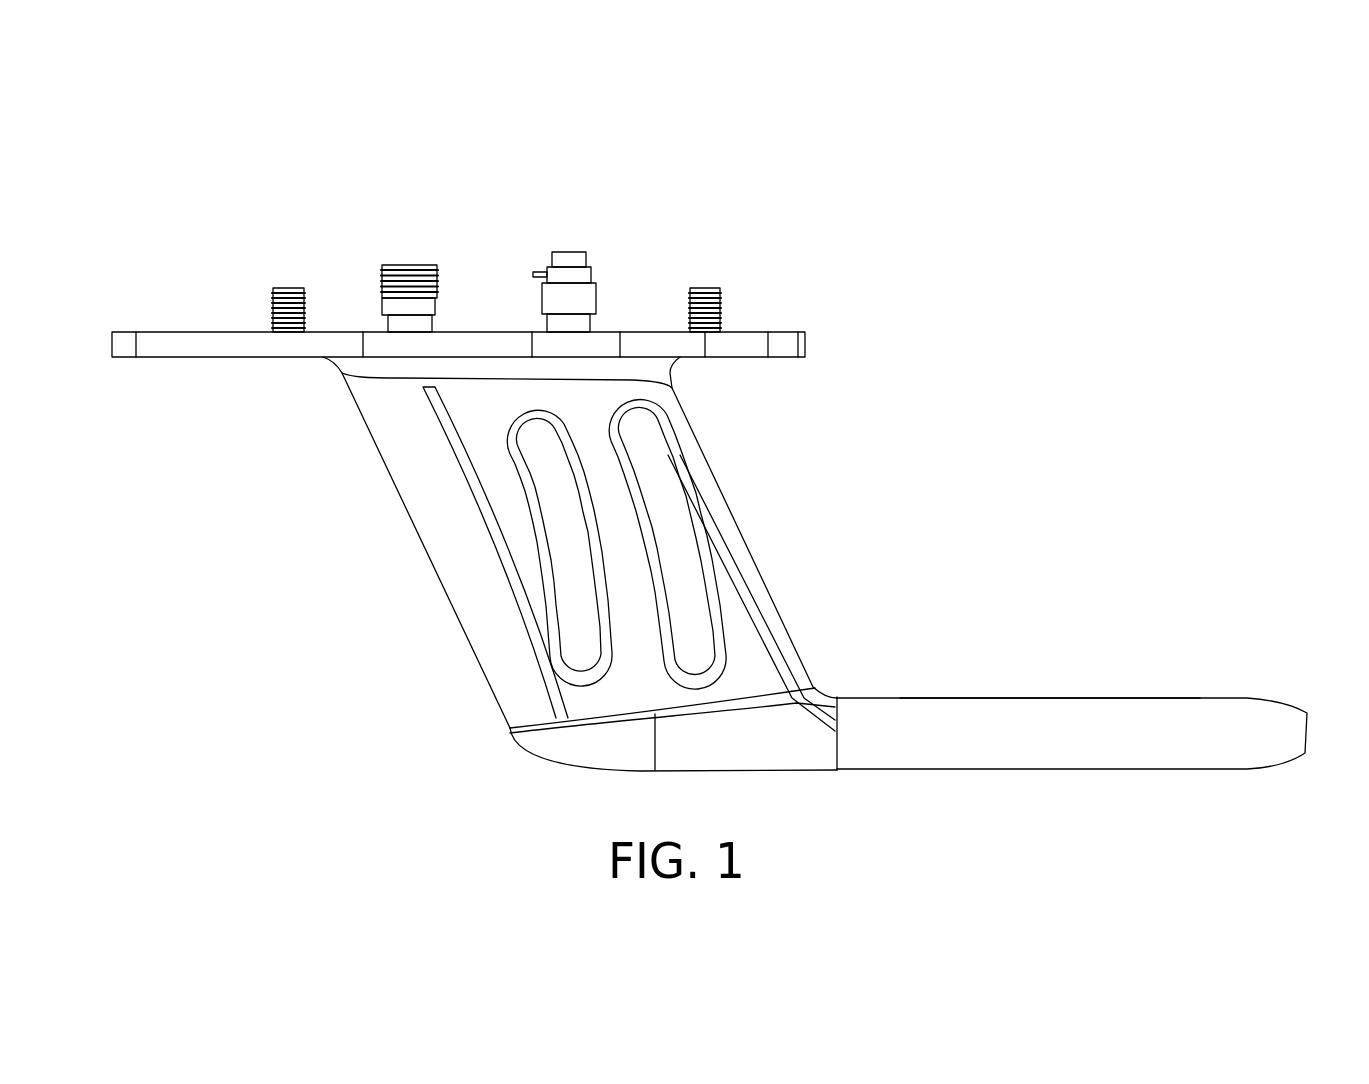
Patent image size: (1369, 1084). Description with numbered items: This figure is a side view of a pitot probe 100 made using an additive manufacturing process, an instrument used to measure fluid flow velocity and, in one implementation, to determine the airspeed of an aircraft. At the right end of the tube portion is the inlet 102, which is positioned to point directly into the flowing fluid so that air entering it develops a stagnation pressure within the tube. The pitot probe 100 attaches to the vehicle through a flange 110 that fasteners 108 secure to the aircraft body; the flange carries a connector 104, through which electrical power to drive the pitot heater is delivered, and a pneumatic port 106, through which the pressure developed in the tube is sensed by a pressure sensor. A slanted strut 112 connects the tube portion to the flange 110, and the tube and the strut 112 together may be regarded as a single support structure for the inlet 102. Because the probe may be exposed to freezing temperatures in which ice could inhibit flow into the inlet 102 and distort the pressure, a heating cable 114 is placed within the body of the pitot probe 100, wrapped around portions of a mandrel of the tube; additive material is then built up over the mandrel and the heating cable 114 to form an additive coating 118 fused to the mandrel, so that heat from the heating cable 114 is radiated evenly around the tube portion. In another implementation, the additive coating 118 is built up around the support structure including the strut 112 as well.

The pitot probe 100 is at (785, 163).
The inlet 102 is at (1307, 727).
The connector 104 is at (437, 282).
The pneumatic port 106 is at (593, 277).
The fasteners 108 is at (275, 298).
The flange 110 is at (127, 358).
The strut 112 is at (421, 497).
The heating cable 114 is at (727, 542).
The additive coating 118 is at (1060, 698).